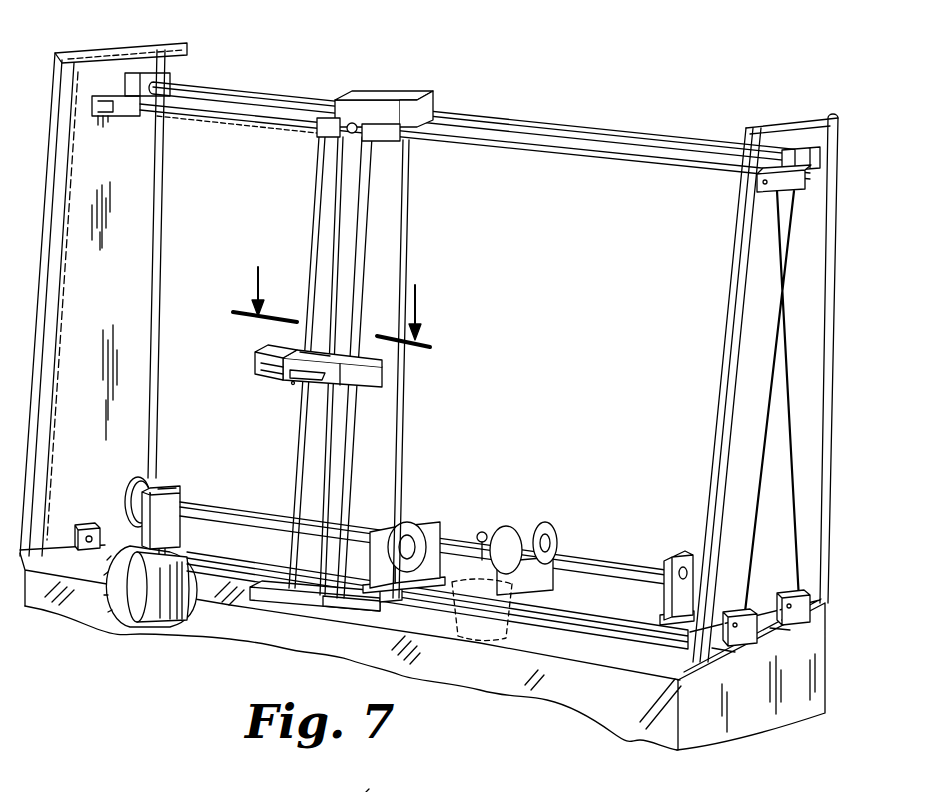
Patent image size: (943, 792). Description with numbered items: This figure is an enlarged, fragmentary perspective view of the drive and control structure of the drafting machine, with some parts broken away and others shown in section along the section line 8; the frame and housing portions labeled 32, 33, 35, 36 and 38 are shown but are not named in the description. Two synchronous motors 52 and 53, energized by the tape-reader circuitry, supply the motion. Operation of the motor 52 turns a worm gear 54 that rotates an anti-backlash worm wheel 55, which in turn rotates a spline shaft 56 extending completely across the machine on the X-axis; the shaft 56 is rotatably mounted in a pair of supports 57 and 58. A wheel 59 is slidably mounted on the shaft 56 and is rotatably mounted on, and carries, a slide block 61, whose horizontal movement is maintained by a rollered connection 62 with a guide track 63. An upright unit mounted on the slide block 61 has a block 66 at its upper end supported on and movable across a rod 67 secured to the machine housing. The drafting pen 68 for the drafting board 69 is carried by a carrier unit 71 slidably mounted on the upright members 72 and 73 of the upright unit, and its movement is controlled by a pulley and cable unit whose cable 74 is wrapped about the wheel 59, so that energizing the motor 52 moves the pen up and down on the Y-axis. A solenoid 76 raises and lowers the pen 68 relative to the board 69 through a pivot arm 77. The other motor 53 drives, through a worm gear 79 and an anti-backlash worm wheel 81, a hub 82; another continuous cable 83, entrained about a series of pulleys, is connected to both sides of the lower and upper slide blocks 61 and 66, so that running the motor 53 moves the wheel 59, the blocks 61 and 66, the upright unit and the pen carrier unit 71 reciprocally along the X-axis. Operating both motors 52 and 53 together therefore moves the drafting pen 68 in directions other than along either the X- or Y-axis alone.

The section line 8- 8 is at (343, 301).
The vertical post 32 is at (150, 245).
The base end portion 33 is at (743, 730).
The base 35 is at (93, 617).
The base front portion 36 is at (607, 713).
The upper frame member 38 is at (131, 44).
The synchronous motor 52 is at (143, 617).
The synchronous motor 53 is at (473, 636).
The worm gear 54 is at (167, 487).
The anti-backlash worm wheel 55 is at (127, 497).
The spline shaft 56 is at (220, 520).
The support 57 is at (187, 497).
The support 58 is at (688, 553).
The wheel 59 is at (420, 523).
The slide block 61 is at (320, 617).
The rollered connection 62 is at (397, 600).
The guide track 63 is at (587, 630).
The block 66 is at (392, 93).
The rod 67 is at (517, 122).
The drafting pen 68 is at (297, 381).
The drafting board 69 is at (381, 782).
The carrier unit 71 is at (370, 376).
The upright member 72 is at (318, 224).
The upright member 73 is at (375, 257).
The cable 74 is at (317, 174).
The solenoid 76 is at (280, 350).
The pivot arm 77 is at (265, 368).
The worm gear 79 is at (482, 532).
The anti-backlash worm wheel 81 is at (507, 527).
The hub 82 is at (545, 523).
The continuous cable 83 is at (760, 453).